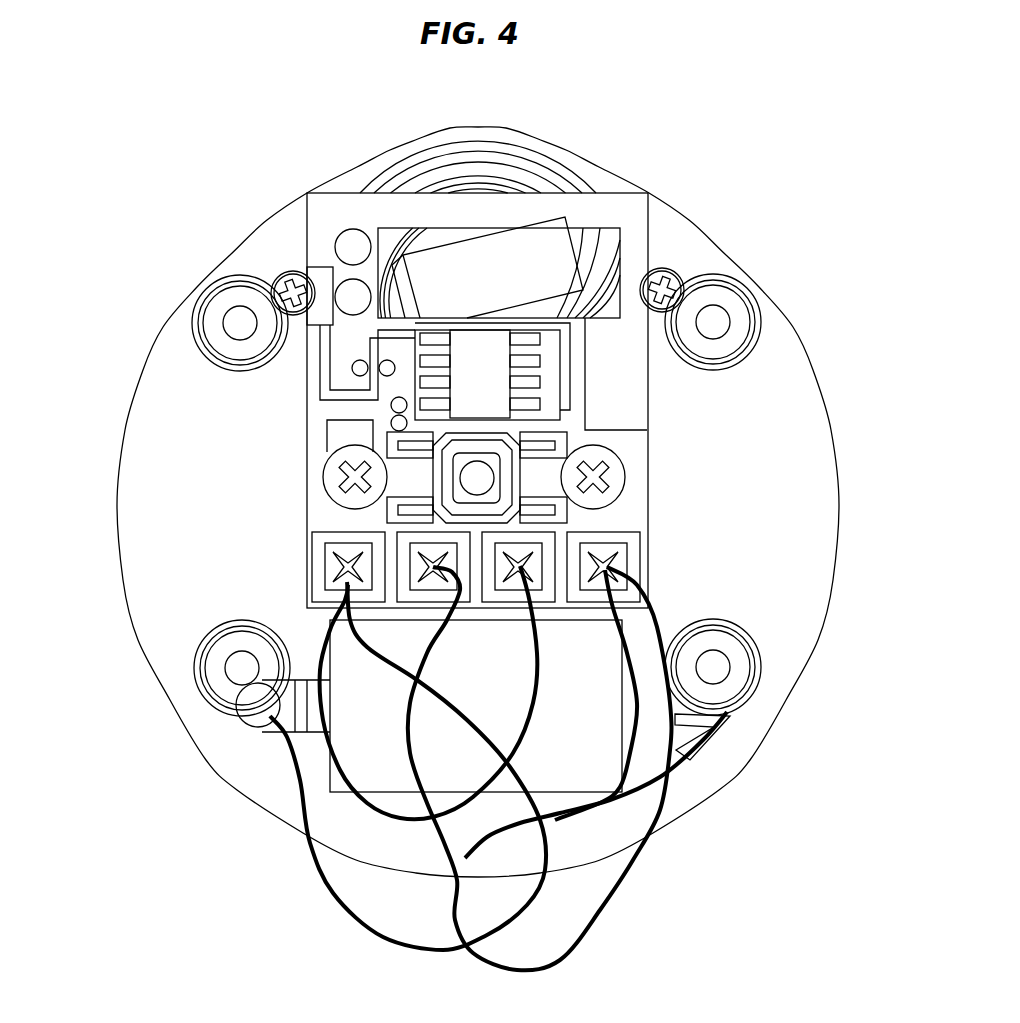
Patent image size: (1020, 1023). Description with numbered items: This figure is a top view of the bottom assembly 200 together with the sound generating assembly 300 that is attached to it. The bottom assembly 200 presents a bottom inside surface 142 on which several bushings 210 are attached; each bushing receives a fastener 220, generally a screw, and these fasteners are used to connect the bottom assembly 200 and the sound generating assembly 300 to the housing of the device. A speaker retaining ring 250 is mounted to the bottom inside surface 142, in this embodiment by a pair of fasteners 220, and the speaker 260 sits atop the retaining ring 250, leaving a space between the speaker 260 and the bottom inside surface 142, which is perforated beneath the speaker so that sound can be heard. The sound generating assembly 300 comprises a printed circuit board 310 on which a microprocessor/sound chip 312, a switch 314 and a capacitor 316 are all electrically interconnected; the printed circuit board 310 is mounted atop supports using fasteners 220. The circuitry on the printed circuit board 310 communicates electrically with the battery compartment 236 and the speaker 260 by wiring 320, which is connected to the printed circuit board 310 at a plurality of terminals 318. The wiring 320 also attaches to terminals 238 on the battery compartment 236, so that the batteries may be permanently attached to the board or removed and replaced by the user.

The bottom inside surface 142 is at (207, 508).
The bottom assembly 200 is at (163, 350).
The bushings 210 is at (218, 684).
The fastener 220 is at (333, 478).
The battery compartment 236 is at (587, 760).
The terminals 238 is at (235, 723).
The speaker retaining ring 250 is at (535, 145).
The speaker 260 is at (562, 187).
The sound generating assembly 300 is at (352, 208).
The printed circuit board 310 is at (320, 210).
The microprocessor/sound chip 312 is at (488, 380).
The switch 314 is at (482, 480).
The capacitor 316 is at (553, 260).
The terminals 318 is at (535, 540).
The wiring 320 is at (335, 877).